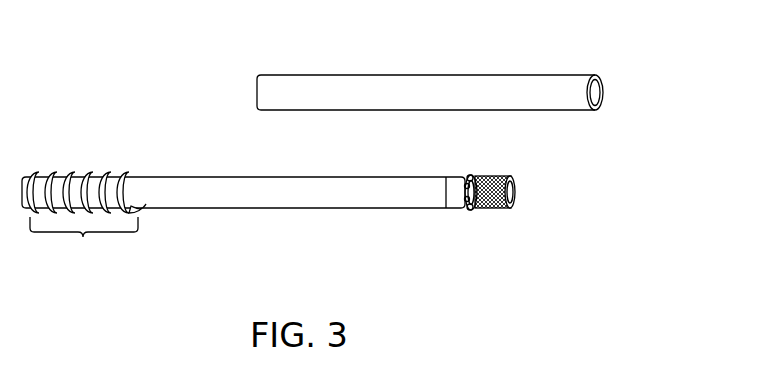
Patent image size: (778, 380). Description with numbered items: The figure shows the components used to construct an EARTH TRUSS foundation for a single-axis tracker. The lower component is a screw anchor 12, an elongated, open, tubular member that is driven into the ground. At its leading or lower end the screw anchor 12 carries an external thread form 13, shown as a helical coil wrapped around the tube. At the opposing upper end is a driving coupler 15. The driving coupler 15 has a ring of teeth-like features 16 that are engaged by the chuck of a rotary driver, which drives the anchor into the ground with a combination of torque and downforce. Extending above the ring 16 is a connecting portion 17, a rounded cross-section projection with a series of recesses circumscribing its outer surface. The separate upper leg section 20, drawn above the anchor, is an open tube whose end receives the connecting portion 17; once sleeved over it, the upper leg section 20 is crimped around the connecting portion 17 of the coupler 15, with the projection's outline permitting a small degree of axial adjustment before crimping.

The upper leg section 20 is at (428, 75).
The screw anchor 12 is at (307, 208).
The external thread form 13 is at (83, 237).
The driving coupler 15 is at (518, 193).
The ring of teeth-like features 16 is at (477, 208).
The connecting portion 17 is at (498, 208).